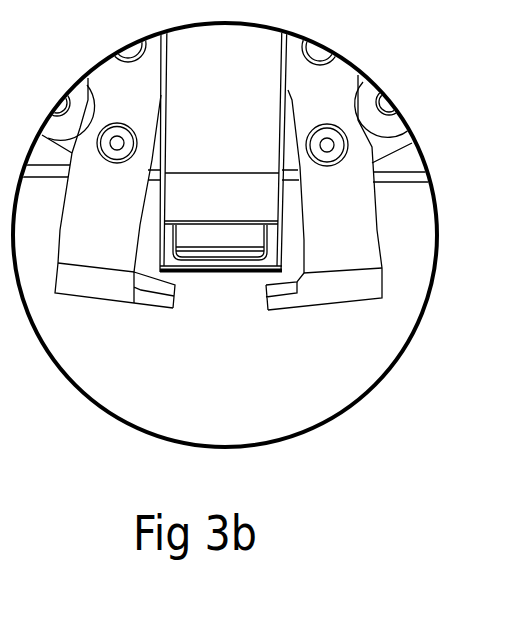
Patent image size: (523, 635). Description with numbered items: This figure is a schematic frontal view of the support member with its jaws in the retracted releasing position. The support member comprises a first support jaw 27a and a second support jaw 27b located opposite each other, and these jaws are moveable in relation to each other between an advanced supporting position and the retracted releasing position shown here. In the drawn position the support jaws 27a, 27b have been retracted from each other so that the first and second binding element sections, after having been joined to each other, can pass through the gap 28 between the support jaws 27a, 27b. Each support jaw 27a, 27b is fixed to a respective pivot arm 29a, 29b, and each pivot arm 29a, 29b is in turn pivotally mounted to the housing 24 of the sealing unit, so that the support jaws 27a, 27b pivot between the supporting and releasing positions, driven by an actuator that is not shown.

The housing 24 is at (393, 177).
The first support jaw 27a is at (147, 300).
The second support jaw 27b is at (293, 303).
The gap 28 is at (213, 305).
The pivot arm 29a is at (100, 238).
The pivot arm 29b is at (337, 260).